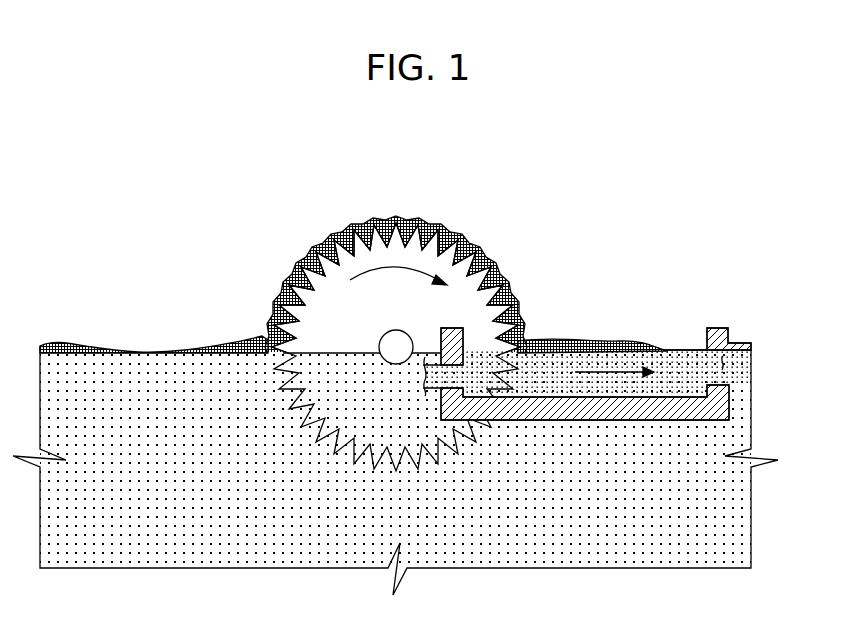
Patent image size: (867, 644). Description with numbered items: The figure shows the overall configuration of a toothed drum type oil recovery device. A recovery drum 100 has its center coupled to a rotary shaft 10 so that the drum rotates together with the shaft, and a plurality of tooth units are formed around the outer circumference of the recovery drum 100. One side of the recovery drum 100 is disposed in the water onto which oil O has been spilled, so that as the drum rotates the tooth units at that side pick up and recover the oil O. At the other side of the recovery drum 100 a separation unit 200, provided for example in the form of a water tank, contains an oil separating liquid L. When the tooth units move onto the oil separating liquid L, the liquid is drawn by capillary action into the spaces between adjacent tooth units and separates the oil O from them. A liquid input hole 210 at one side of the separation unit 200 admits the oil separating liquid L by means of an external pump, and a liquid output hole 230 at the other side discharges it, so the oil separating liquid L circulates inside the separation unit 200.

The recovery drum 100 is at (347, 263).
The rotary shaft 10 is at (387, 340).
The separation unit 200 is at (722, 405).
The liquid input hole 210 is at (522, 378).
The liquid output hole 230 is at (752, 365).
The oil O is at (89, 343).
The oil separating liquid L is at (683, 348).